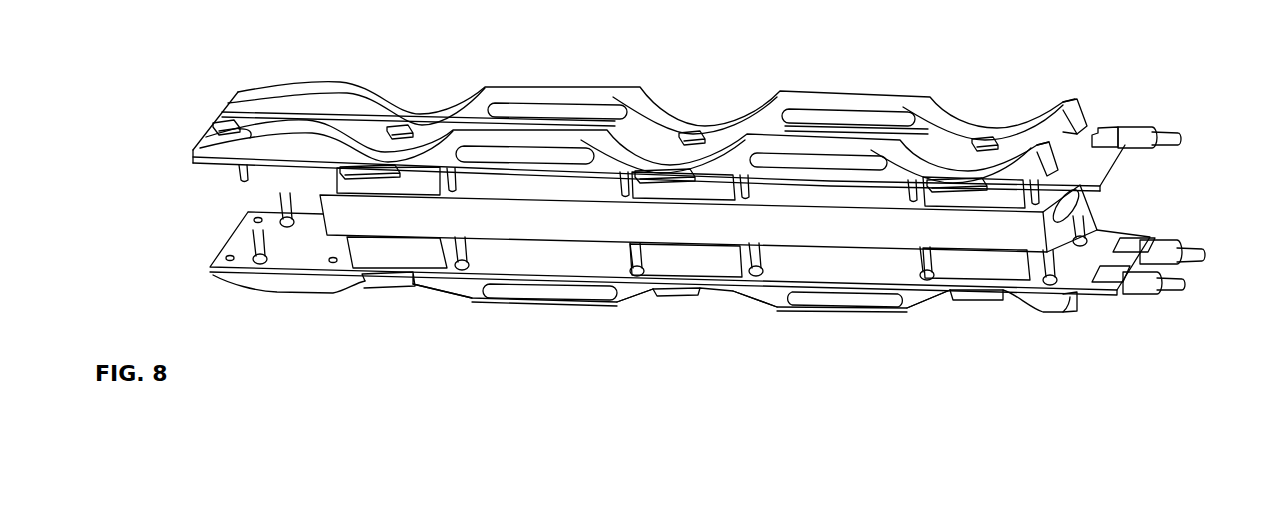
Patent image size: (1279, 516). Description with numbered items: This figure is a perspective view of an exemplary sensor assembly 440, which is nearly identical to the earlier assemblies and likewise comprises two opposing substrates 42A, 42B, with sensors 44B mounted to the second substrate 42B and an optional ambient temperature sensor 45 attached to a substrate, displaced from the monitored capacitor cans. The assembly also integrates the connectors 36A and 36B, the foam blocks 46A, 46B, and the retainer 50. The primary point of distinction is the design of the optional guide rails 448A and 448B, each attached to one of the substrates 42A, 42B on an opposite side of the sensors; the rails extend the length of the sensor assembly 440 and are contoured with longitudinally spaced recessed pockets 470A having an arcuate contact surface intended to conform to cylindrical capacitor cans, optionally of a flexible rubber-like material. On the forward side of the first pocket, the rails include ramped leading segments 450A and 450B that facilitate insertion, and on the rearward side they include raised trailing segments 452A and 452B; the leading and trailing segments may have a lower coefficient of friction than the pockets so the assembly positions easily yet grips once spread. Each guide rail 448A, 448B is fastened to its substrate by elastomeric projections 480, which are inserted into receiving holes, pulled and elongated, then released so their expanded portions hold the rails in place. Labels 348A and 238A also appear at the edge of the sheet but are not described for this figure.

The sensor assembly 440 is at (1046, 66).
The retainer 50 is at (1080, 203).
The guide rail 448B is at (245, 99).
The recessed pocket 470A is at (485, 92).
The raised trailing segment 452B is at (508, 140).
The sensor 44B is at (393, 127).
The ambient temperature sensor 45 is at (230, 125).
The second substrate 42B is at (195, 160).
The ramped leading segment 450A is at (245, 137).
The connector 36B is at (1142, 130).
The foam block 46B is at (418, 182).
The elastomeric projection 480 is at (553, 183).
The foam block 46A is at (390, 253).
The first substrate 42A is at (212, 268).
The guide rail 448A is at (283, 295).
The ramped leading segment 450B is at (250, 287).
The raised trailing segment 452A is at (575, 305).
The connector 36A is at (1140, 290).
The sheet 348A is at (981, 7).
The plate 238A is at (1250, 6).